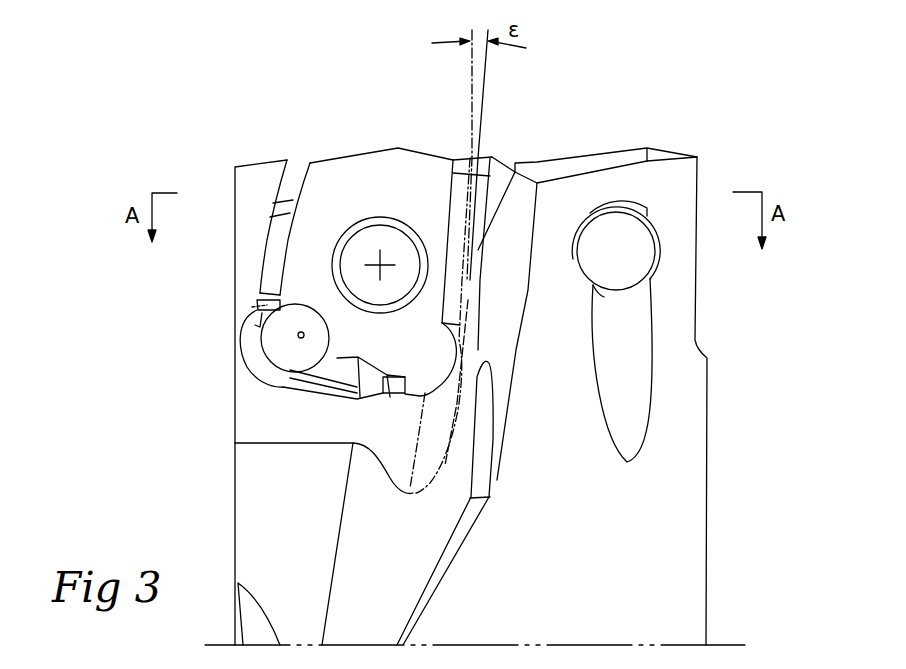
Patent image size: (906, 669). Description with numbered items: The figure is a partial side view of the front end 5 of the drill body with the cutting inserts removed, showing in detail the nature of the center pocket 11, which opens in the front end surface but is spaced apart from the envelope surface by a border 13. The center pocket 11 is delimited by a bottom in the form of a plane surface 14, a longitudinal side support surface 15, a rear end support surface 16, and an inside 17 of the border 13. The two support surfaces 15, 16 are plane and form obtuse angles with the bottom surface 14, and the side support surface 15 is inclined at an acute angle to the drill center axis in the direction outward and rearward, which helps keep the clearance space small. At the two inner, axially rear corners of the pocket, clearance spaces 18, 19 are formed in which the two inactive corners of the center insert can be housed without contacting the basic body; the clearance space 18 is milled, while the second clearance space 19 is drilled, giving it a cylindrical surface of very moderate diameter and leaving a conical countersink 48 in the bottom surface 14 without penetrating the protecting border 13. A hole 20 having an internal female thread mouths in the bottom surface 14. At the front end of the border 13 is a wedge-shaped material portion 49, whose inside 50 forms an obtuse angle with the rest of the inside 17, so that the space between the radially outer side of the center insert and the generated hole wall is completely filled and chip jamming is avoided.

The front end 5 is at (423, 153).
The center pocket 11 is at (446, 374).
The border 13 is at (245, 227).
The plane surface 14 is at (362, 197).
The longitudinal side support surface 15 is at (467, 218).
The rear end support surface 16 is at (337, 363).
The inside 17 is at (273, 263).
The clearance space 18 is at (420, 387).
The clearance space 19 is at (268, 367).
The hole 20 is at (393, 280).
The conical countersink 48 is at (293, 317).
The wedge-shaped material portion 49 is at (268, 175).
The inside 50 is at (281, 179).